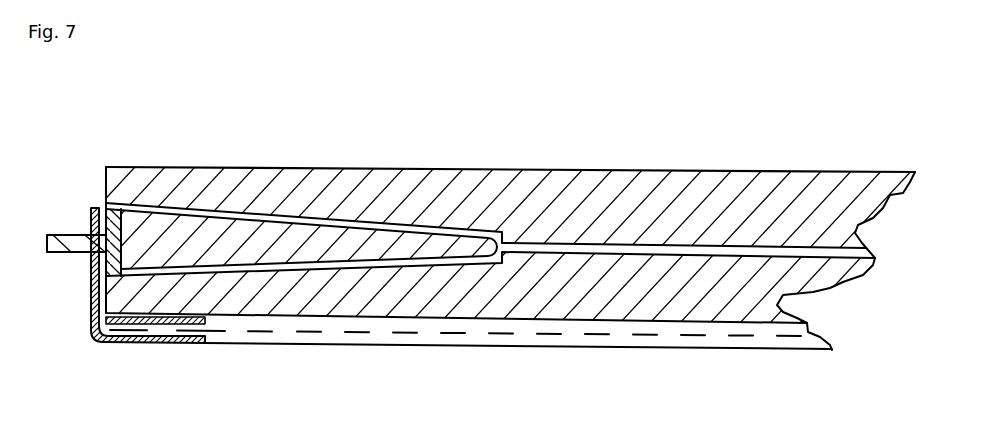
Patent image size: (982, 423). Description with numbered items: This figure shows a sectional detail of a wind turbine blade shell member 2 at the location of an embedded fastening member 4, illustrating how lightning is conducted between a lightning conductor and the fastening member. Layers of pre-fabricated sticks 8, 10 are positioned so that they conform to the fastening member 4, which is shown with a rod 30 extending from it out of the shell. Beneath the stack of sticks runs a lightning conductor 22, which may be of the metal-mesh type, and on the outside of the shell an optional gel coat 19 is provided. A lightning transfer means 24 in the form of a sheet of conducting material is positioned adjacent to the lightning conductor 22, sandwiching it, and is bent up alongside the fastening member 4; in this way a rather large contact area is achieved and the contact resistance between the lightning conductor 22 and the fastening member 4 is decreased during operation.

The wind turbine blade shell member 2 is at (182, 135).
The fastening member 4 is at (148, 238).
The pre-fabricated sticks 8 is at (317, 183).
The pre-fabricated sticks 10 is at (480, 231).
The gel coat 19 is at (612, 348).
The lightning conductor 22 is at (308, 333).
The lightning transfer means 24 is at (108, 347).
The rod extending from fastening member 30 is at (76, 245).